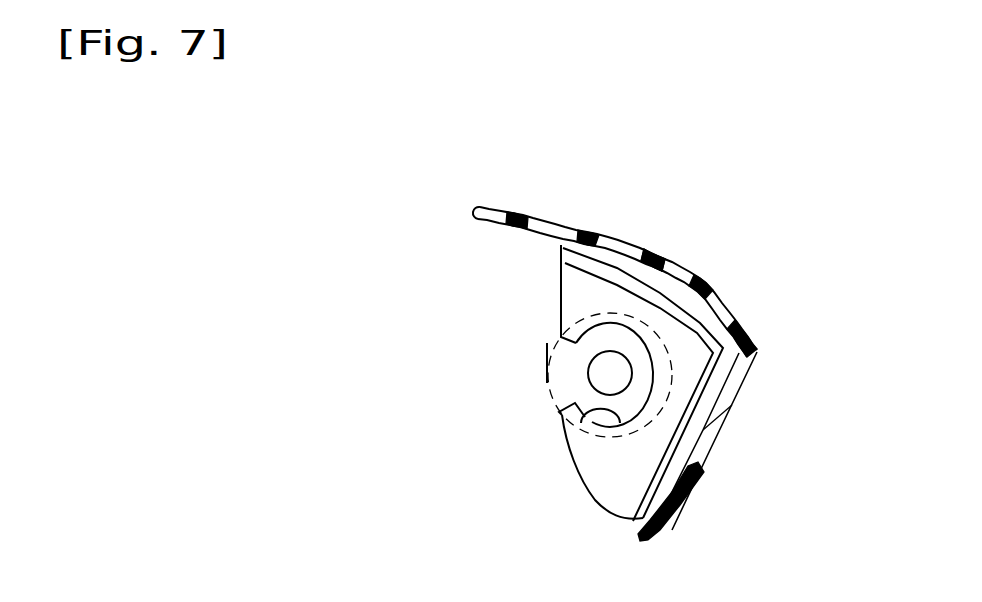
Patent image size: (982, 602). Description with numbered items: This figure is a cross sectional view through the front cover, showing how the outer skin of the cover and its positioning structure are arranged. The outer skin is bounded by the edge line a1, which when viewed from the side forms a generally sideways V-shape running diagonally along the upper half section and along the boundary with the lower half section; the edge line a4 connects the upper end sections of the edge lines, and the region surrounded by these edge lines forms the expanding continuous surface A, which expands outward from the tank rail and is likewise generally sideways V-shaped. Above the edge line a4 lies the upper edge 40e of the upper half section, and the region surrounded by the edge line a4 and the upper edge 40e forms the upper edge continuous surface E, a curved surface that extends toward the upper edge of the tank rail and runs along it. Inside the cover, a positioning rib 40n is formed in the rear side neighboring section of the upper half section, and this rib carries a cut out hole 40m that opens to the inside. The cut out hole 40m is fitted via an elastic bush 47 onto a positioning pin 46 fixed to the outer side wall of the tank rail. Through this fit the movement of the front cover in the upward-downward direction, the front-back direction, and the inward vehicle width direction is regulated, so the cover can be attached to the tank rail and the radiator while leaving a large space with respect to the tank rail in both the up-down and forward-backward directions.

The upper edge 40e is at (477, 207).
The upper edge continuous surface E is at (573, 227).
The edge line a4 is at (640, 247).
The expanding continuous surface A is at (700, 280).
The edge line a1 is at (757, 350).
The elastic bush 47 is at (547, 347).
The positioning pin 46 is at (586, 373).
The cut out hole 40m is at (578, 417).
The positioning rib 40n is at (593, 502).